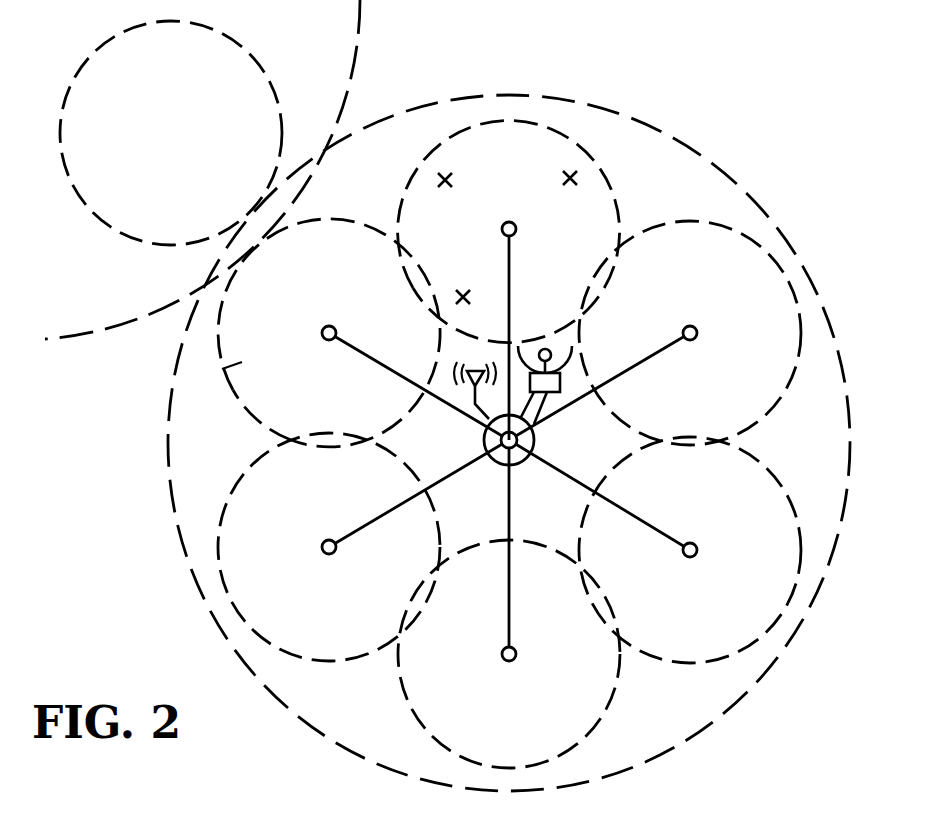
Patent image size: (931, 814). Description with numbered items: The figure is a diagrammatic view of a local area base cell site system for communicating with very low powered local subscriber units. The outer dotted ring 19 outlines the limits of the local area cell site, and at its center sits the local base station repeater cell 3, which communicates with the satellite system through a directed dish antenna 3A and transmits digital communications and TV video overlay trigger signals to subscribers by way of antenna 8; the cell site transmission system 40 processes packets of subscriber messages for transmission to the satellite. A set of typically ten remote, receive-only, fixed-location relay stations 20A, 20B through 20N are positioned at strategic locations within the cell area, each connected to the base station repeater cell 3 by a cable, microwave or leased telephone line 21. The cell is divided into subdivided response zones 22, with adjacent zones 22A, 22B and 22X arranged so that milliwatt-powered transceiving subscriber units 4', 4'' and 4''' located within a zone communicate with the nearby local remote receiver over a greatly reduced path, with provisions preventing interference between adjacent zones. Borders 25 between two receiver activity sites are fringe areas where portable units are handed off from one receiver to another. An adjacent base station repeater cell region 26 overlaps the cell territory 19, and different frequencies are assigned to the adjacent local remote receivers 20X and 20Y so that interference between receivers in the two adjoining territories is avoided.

The outer dotted ring 19 is at (711, 156).
The adjacent base station repeater cell region 26 is at (356, 44).
The local remote receiver 20Y is at (106, 220).
The subdivided response zone 22 is at (418, 173).
The adjacent zone 22A is at (226, 366).
The adjacent zone 22B is at (683, 246).
The local remote receiver activity site 22X is at (252, 413).
The border 25 is at (408, 280).
The local base station repeater cell 3 is at (492, 463).
The directed dish antenna 3A is at (528, 332).
The cable, microwave or leased telephone line 21 is at (511, 281).
The remote receive-only fixed-location relay station 20A is at (518, 225).
The remote receive-only fixed-location relay station 20B is at (698, 327).
The local remote receiver 20X is at (322, 333).
The remote receive-only fixed-location relay station 20N is at (698, 550).
The transceiving subscriber unit 4' is at (465, 168).
The transceiving subscriber unit 4'' is at (470, 271).
The transceiving subscriber unit 4''' is at (603, 164).
The antenna 8 is at (470, 398).
The cell site transmission system 40 is at (557, 393).